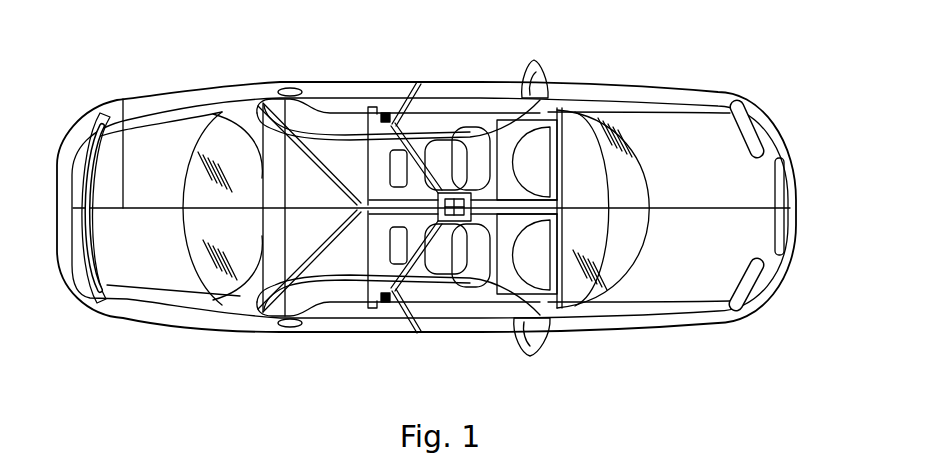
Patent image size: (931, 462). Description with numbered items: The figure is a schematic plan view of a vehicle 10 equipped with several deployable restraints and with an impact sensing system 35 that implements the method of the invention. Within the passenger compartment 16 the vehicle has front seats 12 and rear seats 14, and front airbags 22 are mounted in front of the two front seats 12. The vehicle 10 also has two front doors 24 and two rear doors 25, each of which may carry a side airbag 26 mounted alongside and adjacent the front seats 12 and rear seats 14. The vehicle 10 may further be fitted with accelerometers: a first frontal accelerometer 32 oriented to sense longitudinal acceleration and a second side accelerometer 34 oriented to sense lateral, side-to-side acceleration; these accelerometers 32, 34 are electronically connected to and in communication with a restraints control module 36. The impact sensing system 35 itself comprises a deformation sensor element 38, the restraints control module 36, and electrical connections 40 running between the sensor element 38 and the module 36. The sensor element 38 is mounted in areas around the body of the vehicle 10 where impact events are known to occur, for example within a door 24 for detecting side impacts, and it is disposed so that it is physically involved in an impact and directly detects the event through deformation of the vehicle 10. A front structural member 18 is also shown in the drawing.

The vehicle 10 is at (744, 90).
The front seats 12 is at (542, 97).
The rear seats 14 is at (197, 120).
The passenger compartment 16 is at (378, 312).
The front pillar 18 is at (247, 103).
The front airbags 22 is at (637, 293).
The front doors 24 is at (460, 332).
The rear doors 25 is at (315, 83).
The side airbag 26 is at (472, 112).
The first frontal accelerometer 32 is at (533, 322).
The second side accelerometer 34 is at (393, 118).
The impact sensing system 35 is at (586, 159).
The restraints control module 36 is at (366, 108).
The deformation sensor element 38 is at (793, 193).
The electrical connections 40 is at (123, 100).